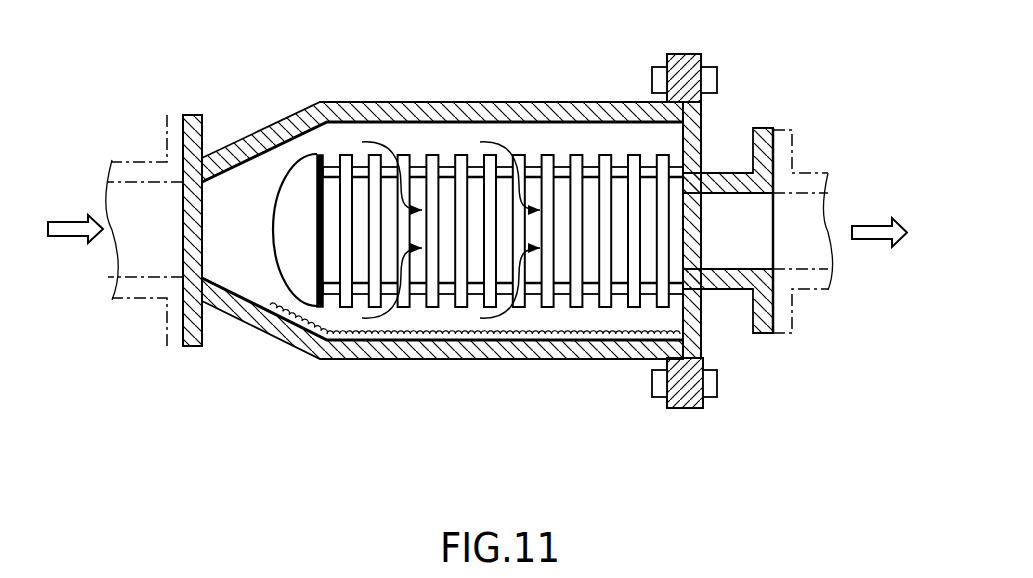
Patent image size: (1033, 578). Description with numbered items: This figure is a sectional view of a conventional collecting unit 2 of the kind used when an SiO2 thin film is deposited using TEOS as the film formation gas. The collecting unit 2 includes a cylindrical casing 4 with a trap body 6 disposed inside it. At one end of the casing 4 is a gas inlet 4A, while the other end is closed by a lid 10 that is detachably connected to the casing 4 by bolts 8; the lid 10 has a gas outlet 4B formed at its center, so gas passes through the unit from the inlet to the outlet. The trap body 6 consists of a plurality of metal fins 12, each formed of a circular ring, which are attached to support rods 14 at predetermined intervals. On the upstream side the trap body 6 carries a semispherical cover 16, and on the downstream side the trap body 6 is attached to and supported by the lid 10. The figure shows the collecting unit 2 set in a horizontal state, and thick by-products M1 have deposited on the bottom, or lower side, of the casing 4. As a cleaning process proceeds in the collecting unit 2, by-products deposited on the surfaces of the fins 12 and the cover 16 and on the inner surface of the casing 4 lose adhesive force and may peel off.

The collecting unit 2 is at (310, 452).
The cylindrical casing 4 is at (365, 101).
The gas inlet 4A is at (184, 254).
The gas outlet 4B is at (774, 250).
The trap body 6 is at (529, 137).
The bolts 8 is at (717, 80).
The lid 10 is at (703, 340).
The metal fins 12 is at (408, 136).
The support rods 14 is at (329, 166).
The semispherical cover 16 is at (299, 170).
The by-products M1 is at (505, 358).